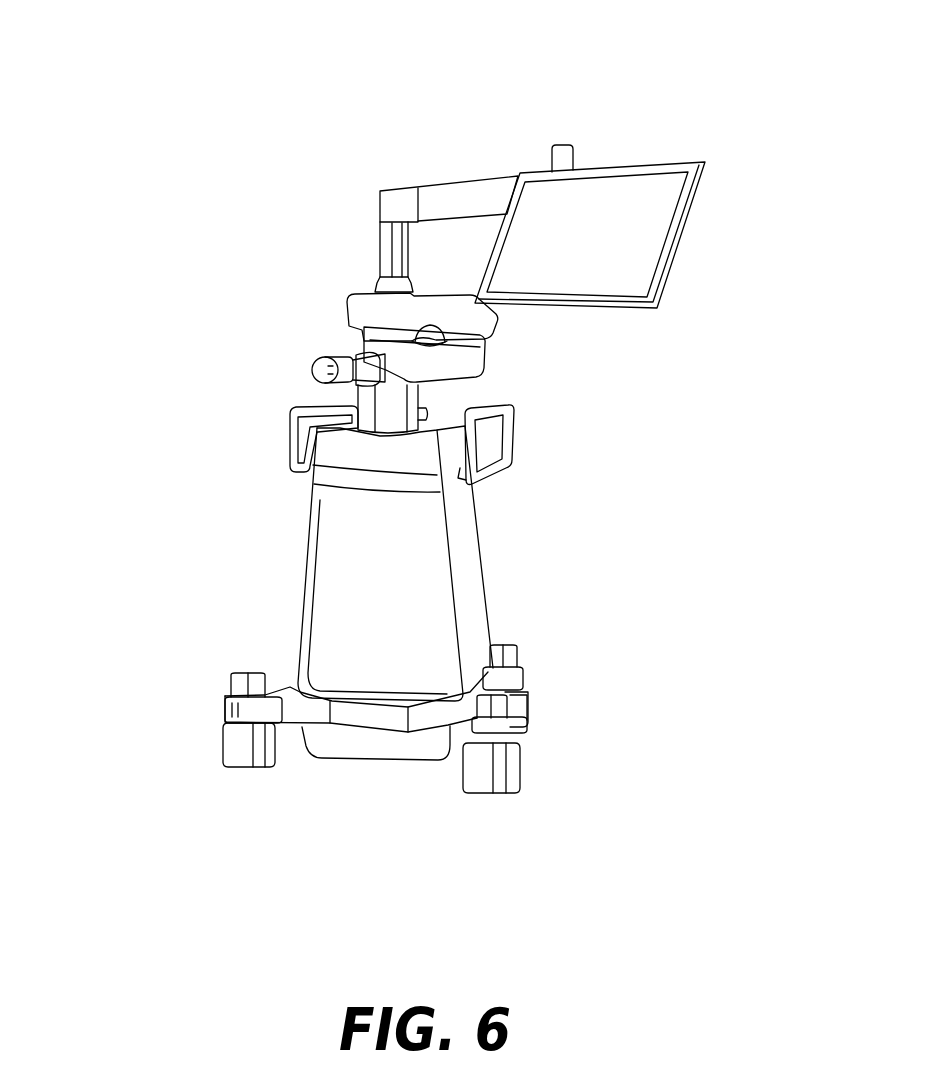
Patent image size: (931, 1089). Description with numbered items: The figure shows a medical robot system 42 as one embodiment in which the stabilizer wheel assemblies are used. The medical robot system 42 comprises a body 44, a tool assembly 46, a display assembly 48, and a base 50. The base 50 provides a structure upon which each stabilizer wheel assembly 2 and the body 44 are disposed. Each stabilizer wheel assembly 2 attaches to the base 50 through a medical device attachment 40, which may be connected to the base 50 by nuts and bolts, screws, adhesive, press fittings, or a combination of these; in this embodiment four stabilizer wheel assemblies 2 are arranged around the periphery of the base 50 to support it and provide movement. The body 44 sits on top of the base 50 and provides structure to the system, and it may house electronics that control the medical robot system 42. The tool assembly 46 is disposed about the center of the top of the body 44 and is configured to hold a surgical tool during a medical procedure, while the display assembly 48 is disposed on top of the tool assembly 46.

The stabilizer wheel assembly 2 is at (215, 680).
The medical device attachment 40 is at (237, 720).
The medical robot system 42 is at (643, 501).
The body 44 is at (337, 588).
The tool assembly 46 is at (315, 321).
The display assembly 48 is at (525, 136).
The base 50 is at (290, 715).